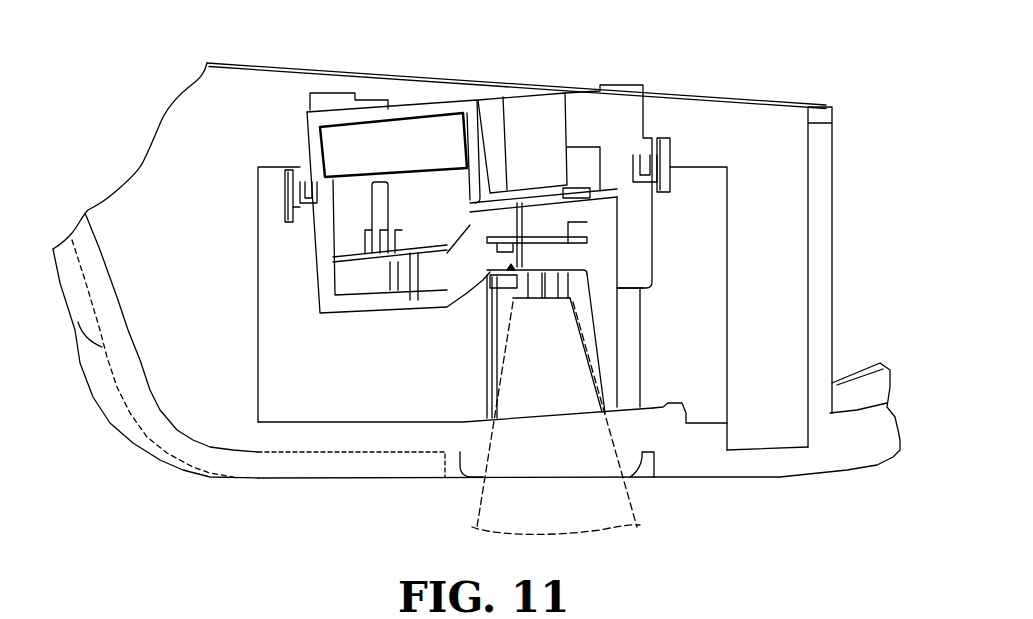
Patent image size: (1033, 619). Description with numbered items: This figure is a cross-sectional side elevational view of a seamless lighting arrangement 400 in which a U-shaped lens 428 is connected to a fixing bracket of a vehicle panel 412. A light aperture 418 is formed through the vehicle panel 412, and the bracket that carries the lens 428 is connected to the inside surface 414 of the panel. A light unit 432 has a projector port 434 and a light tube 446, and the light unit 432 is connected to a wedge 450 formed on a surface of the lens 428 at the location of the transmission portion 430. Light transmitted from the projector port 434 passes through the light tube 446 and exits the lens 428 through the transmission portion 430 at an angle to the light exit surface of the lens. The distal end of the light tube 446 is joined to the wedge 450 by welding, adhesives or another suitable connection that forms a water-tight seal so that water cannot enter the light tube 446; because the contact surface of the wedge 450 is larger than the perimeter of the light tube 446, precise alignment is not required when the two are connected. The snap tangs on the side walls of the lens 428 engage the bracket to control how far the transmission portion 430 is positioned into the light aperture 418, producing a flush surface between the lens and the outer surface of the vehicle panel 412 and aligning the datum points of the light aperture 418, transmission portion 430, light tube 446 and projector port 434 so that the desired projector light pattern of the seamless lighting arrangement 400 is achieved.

The seamless lighting arrangement 400 is at (787, 57).
The vehicle panel 412 is at (340, 487).
The inside surface 414 is at (748, 452).
The light aperture 418 is at (638, 526).
The lens 428 is at (692, 182).
The transmission portion 430 is at (523, 467).
The light unit 432 is at (447, 103).
The projector port 434 is at (533, 262).
The light tube 446 is at (620, 335).
The wedge 450 is at (665, 407).